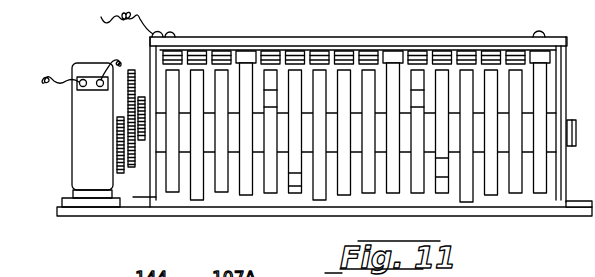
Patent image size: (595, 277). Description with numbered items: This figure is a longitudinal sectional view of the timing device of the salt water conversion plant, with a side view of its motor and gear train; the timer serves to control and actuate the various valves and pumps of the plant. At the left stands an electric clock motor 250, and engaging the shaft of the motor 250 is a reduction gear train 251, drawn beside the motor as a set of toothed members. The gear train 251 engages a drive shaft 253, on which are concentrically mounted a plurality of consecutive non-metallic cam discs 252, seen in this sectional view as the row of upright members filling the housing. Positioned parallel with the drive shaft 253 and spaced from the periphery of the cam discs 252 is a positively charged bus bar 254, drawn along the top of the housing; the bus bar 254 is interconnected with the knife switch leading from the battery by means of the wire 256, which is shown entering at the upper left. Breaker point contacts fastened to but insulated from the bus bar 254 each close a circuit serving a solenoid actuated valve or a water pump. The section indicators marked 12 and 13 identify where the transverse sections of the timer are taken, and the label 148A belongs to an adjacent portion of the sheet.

The electric clock motor 250 is at (72, 151).
The reduction gear train 251 is at (120, 175).
The cam discs 252 is at (294, 195).
The drive shaft 253 is at (161, 146).
The bus bar 254 is at (333, 37).
The wire 256 is at (108, 20).
The section line 12 is at (553, 188).
The section line 13 is at (165, 235).
The element 148A is at (257, 276).